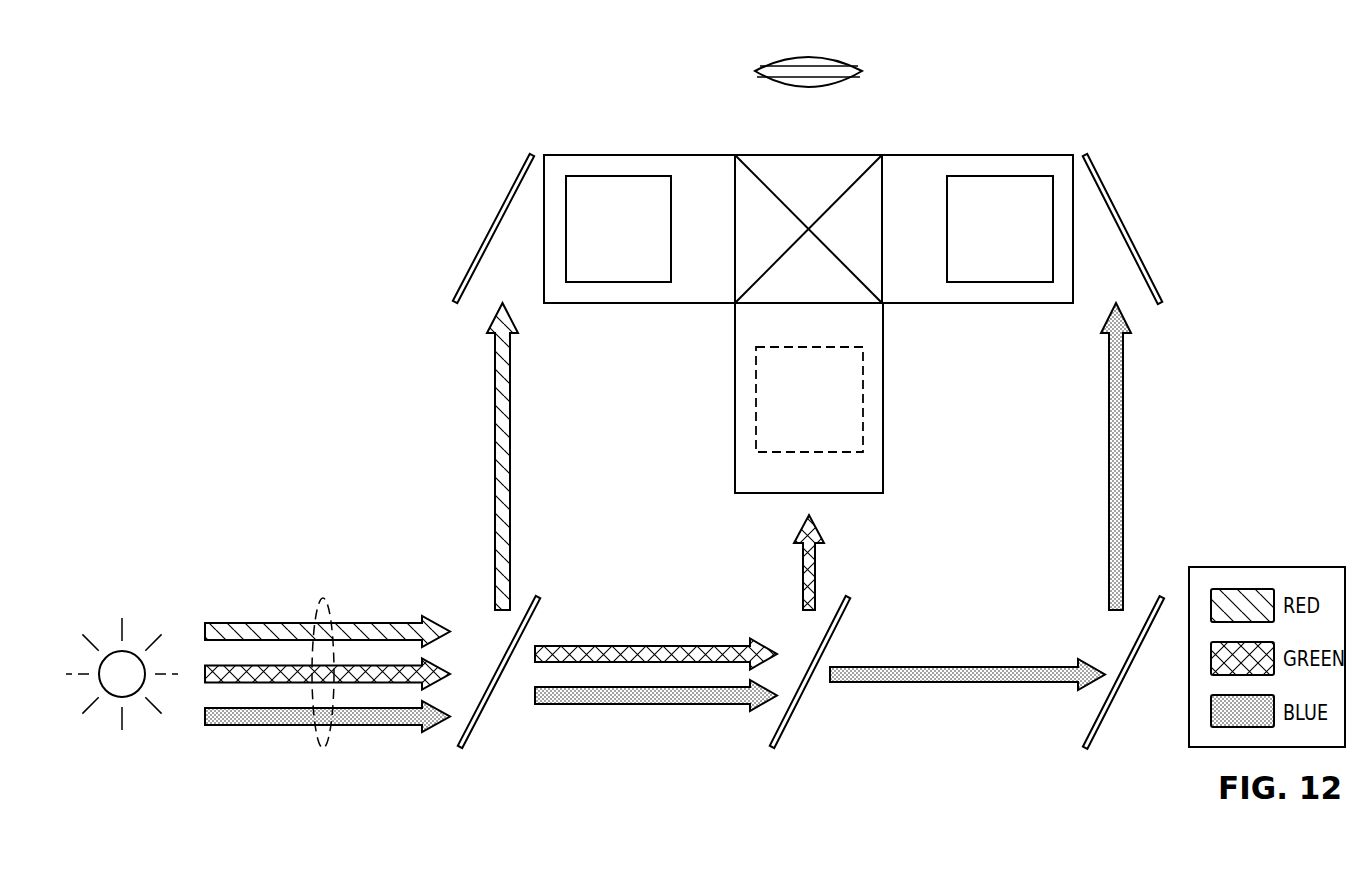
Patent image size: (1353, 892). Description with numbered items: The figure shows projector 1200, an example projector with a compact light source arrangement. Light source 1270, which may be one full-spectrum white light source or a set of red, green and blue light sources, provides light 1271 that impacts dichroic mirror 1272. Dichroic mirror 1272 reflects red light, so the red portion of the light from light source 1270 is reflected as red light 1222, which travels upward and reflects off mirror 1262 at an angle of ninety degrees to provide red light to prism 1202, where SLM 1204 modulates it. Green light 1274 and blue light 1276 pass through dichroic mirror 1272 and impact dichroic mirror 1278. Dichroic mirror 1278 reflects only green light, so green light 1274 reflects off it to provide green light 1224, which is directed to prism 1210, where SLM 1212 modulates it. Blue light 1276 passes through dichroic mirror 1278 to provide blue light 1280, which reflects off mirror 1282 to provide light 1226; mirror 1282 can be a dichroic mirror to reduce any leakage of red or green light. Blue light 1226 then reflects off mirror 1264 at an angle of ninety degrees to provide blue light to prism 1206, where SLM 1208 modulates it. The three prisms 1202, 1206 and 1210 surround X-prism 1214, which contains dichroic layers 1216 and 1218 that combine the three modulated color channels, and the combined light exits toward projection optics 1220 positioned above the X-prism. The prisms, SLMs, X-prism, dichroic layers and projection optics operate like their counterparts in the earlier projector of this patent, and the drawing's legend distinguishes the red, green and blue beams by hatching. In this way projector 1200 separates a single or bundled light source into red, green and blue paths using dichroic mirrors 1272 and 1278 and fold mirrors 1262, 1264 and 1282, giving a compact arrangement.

The projector 1200 is at (286, 109).
The prism 1202 is at (638, 163).
The SLM 1204 is at (645, 245).
The prism 1206 is at (980, 163).
The SLM 1208 is at (1026, 245).
The prism 1210 is at (875, 397).
The SLM 1212 is at (836, 415).
The X-prism 1214 is at (810, 163).
The dichroic layer 1216 is at (867, 298).
The dichroic layer 1218 is at (750, 298).
The projection optics 1220 is at (864, 69).
The red light 1222 is at (493, 468).
The green light 1224 is at (817, 560).
The blue light 1226 is at (1124, 470).
The mirror 1262 is at (494, 227).
The mirror 1264 is at (1128, 227).
The light source 1270 is at (112, 697).
The light 1271 is at (323, 748).
The dichroic mirror 1272 is at (488, 712).
The green light 1274 is at (643, 645).
The blue light 1276 is at (642, 703).
The dichroic mirror 1278 is at (793, 713).
The blue light 1280 is at (953, 683).
The mirror 1282 is at (1102, 730).